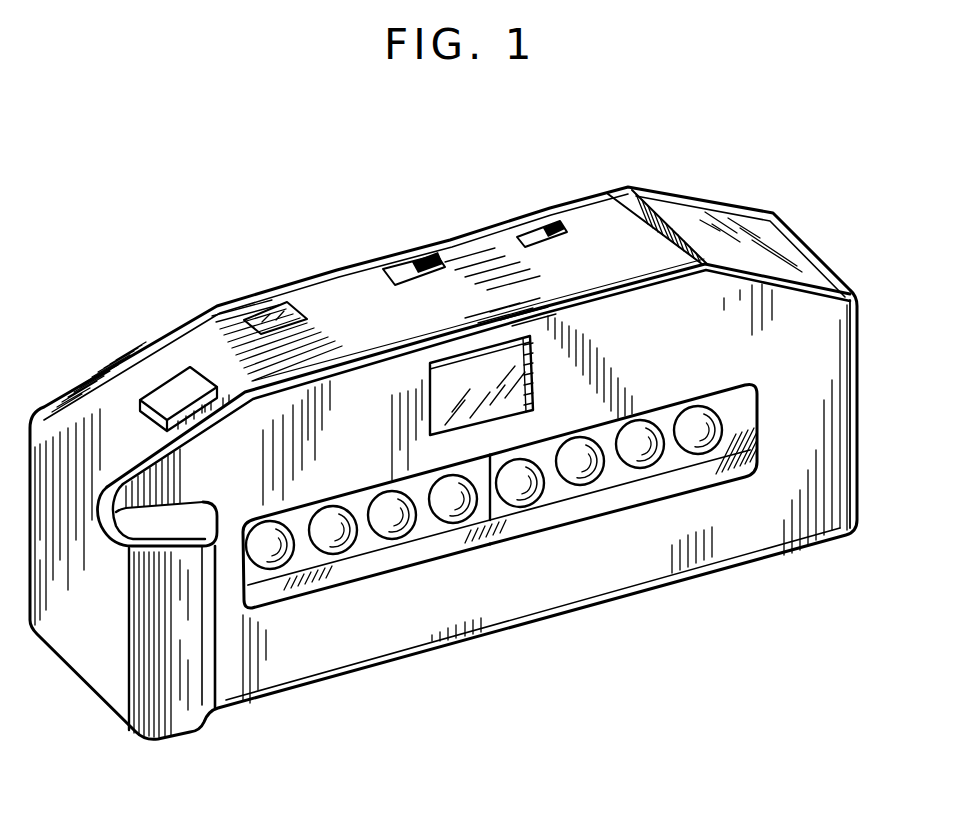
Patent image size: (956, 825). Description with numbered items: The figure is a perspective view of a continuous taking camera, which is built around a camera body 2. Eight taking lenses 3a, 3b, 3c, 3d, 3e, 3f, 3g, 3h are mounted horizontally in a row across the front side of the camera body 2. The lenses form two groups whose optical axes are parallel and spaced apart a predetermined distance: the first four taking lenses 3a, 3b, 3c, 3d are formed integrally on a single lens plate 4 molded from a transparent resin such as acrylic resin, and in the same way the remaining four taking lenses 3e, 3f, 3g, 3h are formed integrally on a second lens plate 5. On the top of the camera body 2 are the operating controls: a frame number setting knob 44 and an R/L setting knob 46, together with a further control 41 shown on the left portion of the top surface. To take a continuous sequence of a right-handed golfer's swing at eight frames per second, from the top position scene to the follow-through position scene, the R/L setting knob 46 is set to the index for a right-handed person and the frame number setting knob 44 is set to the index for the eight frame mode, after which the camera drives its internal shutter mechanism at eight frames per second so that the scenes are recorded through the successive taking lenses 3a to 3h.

The camera body 2 is at (719, 182).
The taking lens 3a is at (260, 553).
The taking lens 3b is at (332, 550).
The taking lens 3c is at (394, 536).
The taking lens 3d is at (458, 521).
The taking lens 3e is at (523, 507).
The taking lens 3f is at (582, 485).
The taking lens 3g is at (640, 468).
The taking lens 3h is at (703, 454).
The lens plate 4 is at (357, 492).
The lens plate 5 is at (664, 400).
The push switch 41 is at (173, 396).
The frame number setting knob 44 is at (424, 256).
The R/L setting knob 46 is at (553, 220).